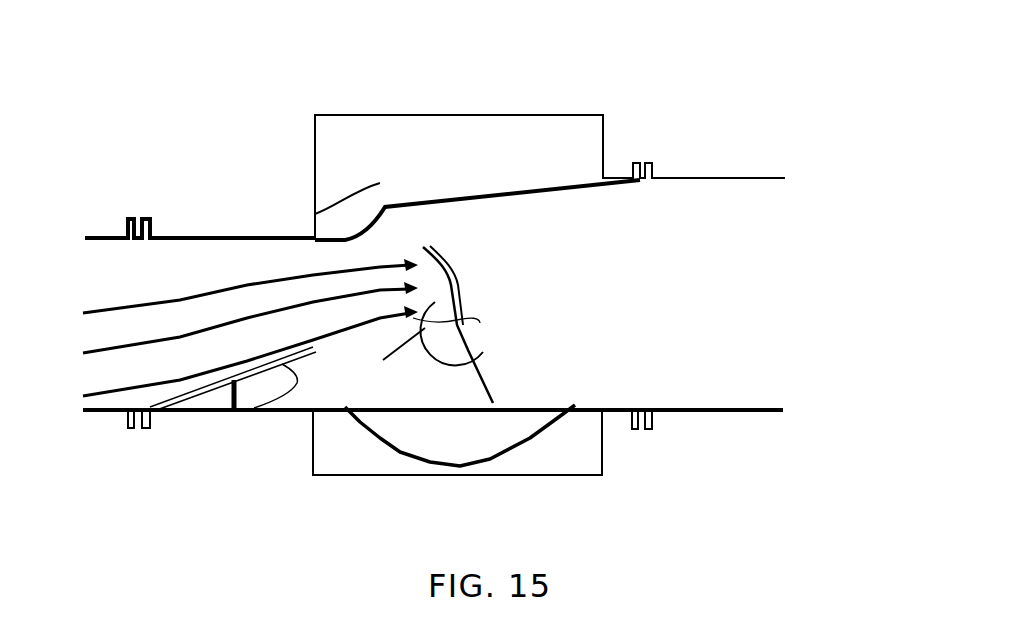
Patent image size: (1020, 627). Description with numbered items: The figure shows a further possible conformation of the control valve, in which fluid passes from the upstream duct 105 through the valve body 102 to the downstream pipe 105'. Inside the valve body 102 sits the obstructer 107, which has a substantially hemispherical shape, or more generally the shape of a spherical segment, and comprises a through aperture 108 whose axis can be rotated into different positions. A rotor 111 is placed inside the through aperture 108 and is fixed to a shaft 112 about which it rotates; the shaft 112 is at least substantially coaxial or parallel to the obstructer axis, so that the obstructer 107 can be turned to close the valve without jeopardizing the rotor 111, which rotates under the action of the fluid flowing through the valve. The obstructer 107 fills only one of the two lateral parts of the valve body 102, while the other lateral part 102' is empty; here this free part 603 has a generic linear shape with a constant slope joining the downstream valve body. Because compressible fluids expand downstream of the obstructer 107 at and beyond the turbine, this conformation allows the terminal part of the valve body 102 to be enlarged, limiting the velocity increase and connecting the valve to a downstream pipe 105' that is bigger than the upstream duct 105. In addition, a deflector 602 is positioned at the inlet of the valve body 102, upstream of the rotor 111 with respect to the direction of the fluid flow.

The free part 603 is at (512, 187).
The other lateral part 102' is at (292, 186).
The rotor 111 is at (480, 323).
The shaft 112 is at (480, 323).
The through aperture 108 is at (598, 367).
The upstream duct 105 is at (332, 445).
The downstream pipe 105' is at (693, 454).
The deflector 602 is at (245, 410).
The valve body 102 is at (420, 442).
The obstructer 107 is at (470, 430).